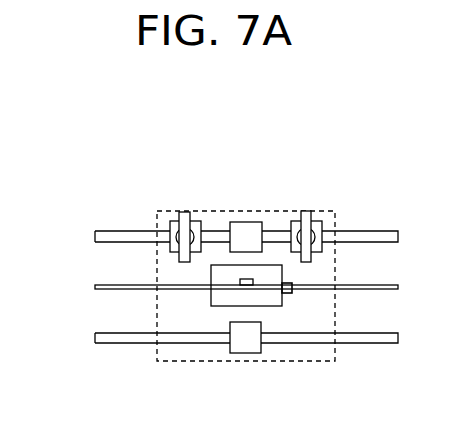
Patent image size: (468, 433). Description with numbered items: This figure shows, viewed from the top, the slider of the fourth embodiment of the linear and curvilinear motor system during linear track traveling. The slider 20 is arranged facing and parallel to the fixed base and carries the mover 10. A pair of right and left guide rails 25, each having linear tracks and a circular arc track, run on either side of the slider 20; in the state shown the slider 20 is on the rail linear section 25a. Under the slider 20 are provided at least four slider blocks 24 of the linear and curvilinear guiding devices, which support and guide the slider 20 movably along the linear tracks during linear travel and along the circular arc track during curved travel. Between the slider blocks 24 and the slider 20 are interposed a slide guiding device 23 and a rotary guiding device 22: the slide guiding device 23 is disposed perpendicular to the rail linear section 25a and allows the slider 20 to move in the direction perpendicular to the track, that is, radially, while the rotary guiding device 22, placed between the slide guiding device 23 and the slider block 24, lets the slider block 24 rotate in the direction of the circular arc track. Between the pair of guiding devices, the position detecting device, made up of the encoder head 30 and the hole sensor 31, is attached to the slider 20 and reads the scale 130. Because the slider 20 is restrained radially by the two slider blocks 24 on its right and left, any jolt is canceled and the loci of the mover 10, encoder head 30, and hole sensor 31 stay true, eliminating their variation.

The mover 10 is at (272, 265).
The slider 20 is at (335, 211).
The rotary guiding device 22 is at (177, 233).
The slide guiding device 23 is at (185, 212).
The slider block 24 is at (174, 221).
The guide rail 25 is at (281, 200).
The rail linear section 25a is at (97, 334).
The encoder head 30 is at (254, 281).
The hole sensor 31 is at (286, 293).
The scale 130 is at (112, 287).